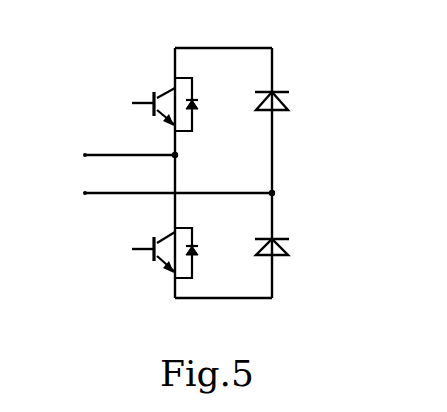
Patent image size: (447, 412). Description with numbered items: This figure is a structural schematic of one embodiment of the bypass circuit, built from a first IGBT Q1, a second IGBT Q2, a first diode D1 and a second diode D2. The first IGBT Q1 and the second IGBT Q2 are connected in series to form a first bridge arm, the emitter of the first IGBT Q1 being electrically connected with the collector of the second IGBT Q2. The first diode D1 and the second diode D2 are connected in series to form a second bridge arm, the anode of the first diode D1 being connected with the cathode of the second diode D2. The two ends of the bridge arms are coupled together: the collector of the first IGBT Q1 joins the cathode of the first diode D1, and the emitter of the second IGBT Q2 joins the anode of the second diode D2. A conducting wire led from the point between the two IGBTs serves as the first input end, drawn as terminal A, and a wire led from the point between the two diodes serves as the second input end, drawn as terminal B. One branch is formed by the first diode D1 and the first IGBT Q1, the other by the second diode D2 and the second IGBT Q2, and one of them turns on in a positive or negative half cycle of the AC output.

The first IGBT Q1 is at (160, 90).
The second IGBT Q2 is at (163, 270).
The first diode D1 is at (292, 103).
The second diode D2 is at (285, 255).
The terminal A is at (119, 154).
The terminal B is at (168, 193).